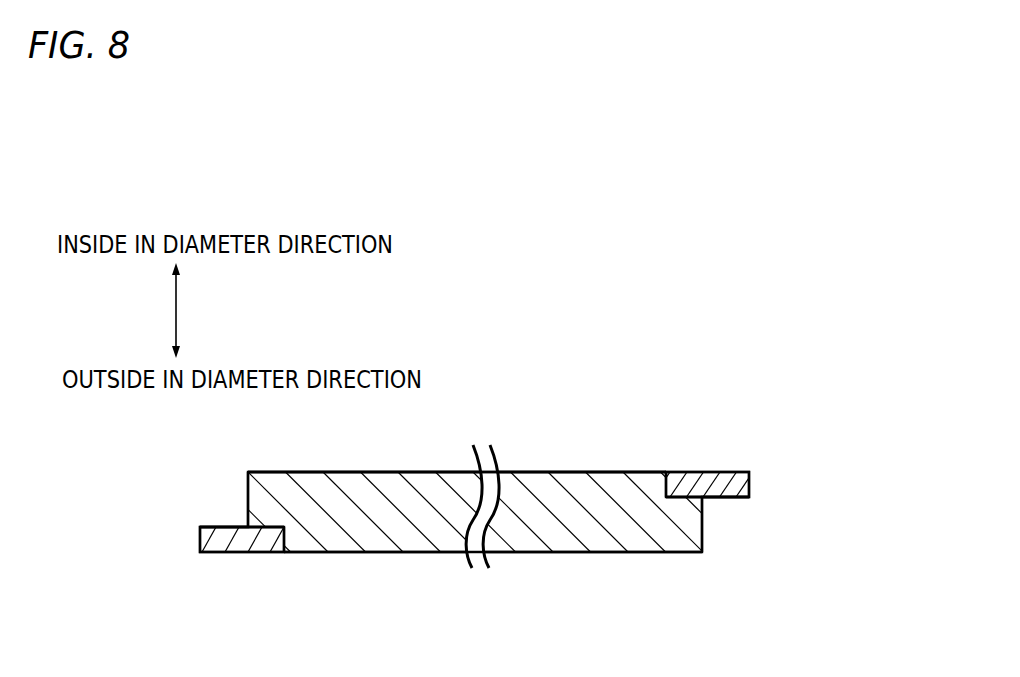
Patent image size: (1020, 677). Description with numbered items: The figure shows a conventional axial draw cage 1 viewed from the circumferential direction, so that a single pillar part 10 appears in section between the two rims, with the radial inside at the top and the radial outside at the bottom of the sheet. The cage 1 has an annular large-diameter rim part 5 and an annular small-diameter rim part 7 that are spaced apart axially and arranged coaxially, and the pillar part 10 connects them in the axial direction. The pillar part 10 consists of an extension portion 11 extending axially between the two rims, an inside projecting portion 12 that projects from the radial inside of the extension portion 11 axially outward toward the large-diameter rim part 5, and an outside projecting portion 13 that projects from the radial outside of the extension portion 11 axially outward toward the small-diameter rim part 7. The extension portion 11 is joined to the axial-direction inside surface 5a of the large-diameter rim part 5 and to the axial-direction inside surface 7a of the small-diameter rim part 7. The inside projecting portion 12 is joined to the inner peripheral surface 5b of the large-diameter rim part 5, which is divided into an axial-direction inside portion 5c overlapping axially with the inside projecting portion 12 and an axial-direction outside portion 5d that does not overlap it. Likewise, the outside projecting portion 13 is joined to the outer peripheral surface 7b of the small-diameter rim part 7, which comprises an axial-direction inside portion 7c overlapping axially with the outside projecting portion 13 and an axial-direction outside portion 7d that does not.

The cage 1 is at (667, 314).
The large-diameter rim part 5 is at (250, 543).
The axial-direction inside surface of the large-diameter rim part 5a is at (284, 540).
The inner peripheral surface of the large-diameter rim part 5b is at (143, 438).
The axial-direction inside portion 5c is at (272, 526).
The axial-direction outside portion 5d is at (222, 527).
The small-diameter rim part 7 is at (710, 482).
The axial-direction inside surface of the small-diameter rim part 7a is at (663, 482).
The outer peripheral surface of the small-diameter rim part 7b is at (810, 500).
The axial-direction inside portion 7c is at (683, 497).
The axial-direction outside portion 7d is at (728, 497).
The pillar part 10 is at (513, 552).
The extension portion 11 is at (439, 487).
The inside projecting portion 12 is at (268, 487).
The outside projecting portion 13 is at (690, 523).